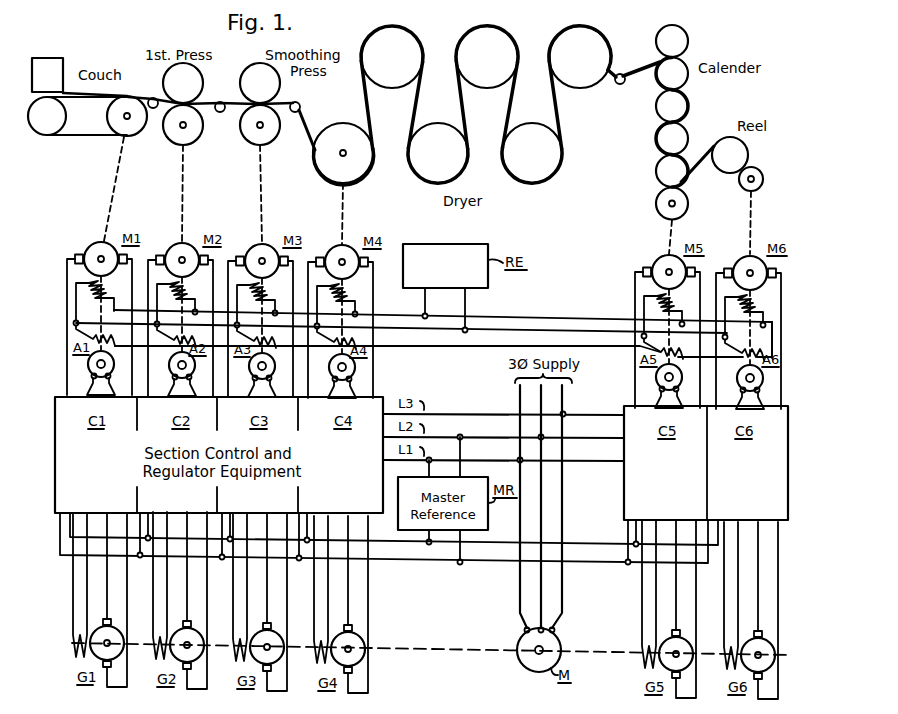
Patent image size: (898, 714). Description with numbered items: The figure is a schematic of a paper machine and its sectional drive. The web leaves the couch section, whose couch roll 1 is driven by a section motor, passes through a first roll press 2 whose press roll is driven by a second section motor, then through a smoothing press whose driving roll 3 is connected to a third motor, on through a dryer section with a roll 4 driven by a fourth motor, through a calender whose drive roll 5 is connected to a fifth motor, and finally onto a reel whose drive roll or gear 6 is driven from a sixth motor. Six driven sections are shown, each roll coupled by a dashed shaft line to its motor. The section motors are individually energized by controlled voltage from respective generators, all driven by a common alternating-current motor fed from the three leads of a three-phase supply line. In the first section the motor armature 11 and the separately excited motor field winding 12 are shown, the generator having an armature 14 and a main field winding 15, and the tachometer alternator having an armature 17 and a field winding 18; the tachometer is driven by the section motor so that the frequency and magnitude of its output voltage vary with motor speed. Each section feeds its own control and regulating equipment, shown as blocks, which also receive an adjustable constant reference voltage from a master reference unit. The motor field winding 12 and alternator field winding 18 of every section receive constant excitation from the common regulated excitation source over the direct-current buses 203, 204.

The couch roll 1 is at (130, 137).
The first roll press 2 is at (190, 140).
The driving roll 3 is at (268, 140).
The roll 4 is at (358, 176).
The drive roll 5 is at (656, 206).
The drive roll or gear 6 is at (743, 188).
The armature 11 is at (92, 244).
The field winding 12 is at (89, 291).
The armature 14 is at (119, 632).
The main field winding 15 is at (73, 643).
The armature 17 is at (87, 364).
The field winding 18 is at (111, 340).
The direct-current bus 203 is at (425, 305).
The direct-current bus 204 is at (465, 303).